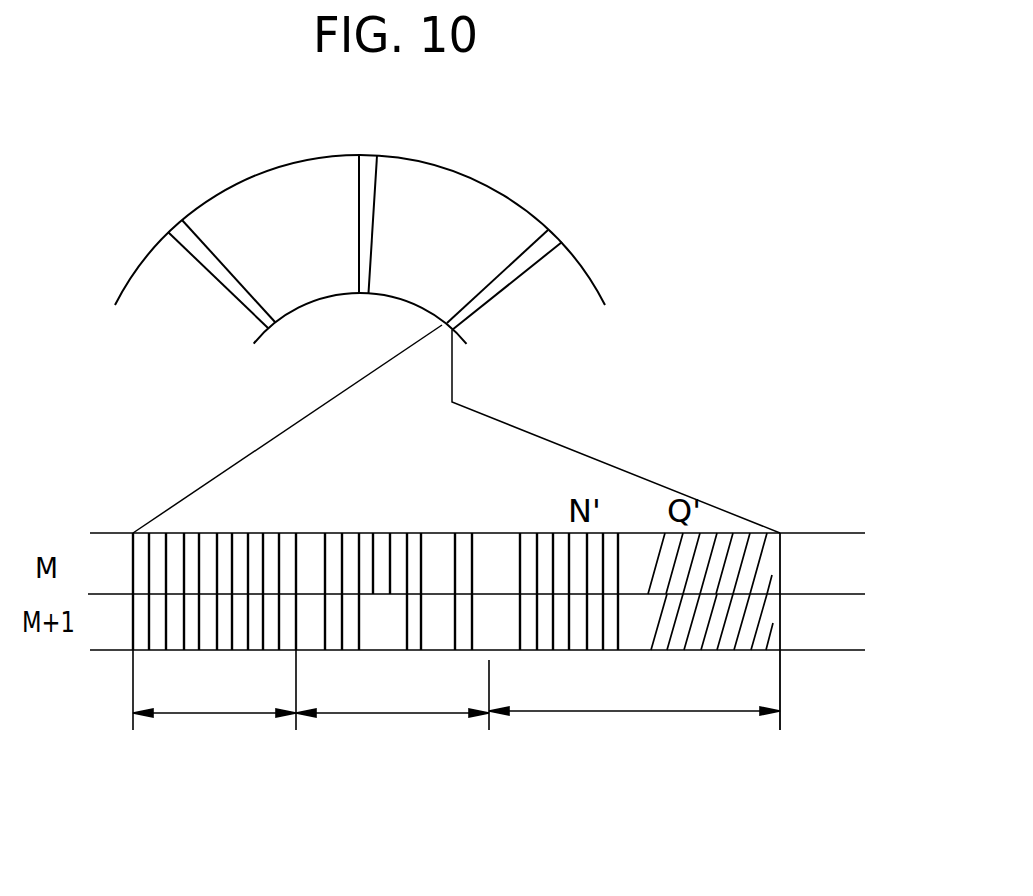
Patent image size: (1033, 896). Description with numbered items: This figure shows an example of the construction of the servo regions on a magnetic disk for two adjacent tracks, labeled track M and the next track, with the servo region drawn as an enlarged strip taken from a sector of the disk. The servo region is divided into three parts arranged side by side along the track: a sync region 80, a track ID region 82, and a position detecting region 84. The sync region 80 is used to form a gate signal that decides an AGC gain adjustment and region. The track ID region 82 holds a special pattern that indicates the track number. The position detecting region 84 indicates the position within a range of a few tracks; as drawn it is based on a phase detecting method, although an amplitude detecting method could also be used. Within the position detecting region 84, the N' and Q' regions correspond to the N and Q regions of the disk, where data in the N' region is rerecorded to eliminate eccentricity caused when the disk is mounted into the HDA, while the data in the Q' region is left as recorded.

The sync region 80 is at (208, 713).
The track ID region 82 is at (393, 713).
The position detecting region 84 is at (640, 711).